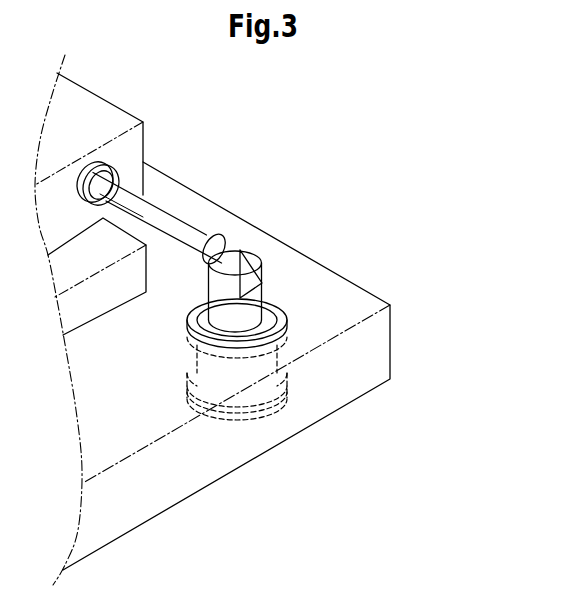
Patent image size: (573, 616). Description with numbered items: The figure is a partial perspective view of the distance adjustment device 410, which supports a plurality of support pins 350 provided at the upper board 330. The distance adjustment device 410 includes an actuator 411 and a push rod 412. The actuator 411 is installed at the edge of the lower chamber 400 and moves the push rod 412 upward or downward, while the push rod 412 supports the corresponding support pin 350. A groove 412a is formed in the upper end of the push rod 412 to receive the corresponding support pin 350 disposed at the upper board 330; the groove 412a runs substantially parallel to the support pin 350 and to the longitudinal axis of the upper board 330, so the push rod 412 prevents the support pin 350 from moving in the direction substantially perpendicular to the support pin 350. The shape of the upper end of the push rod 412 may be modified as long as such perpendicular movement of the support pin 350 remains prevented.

The upper board 330 is at (107, 98).
The support pin 350 is at (182, 213).
The lower chamber 400 is at (293, 251).
The distance adjustment device 410 is at (338, 308).
The actuator 411 is at (275, 348).
The push rod 412 is at (316, 272).
The groove 412a is at (243, 282).